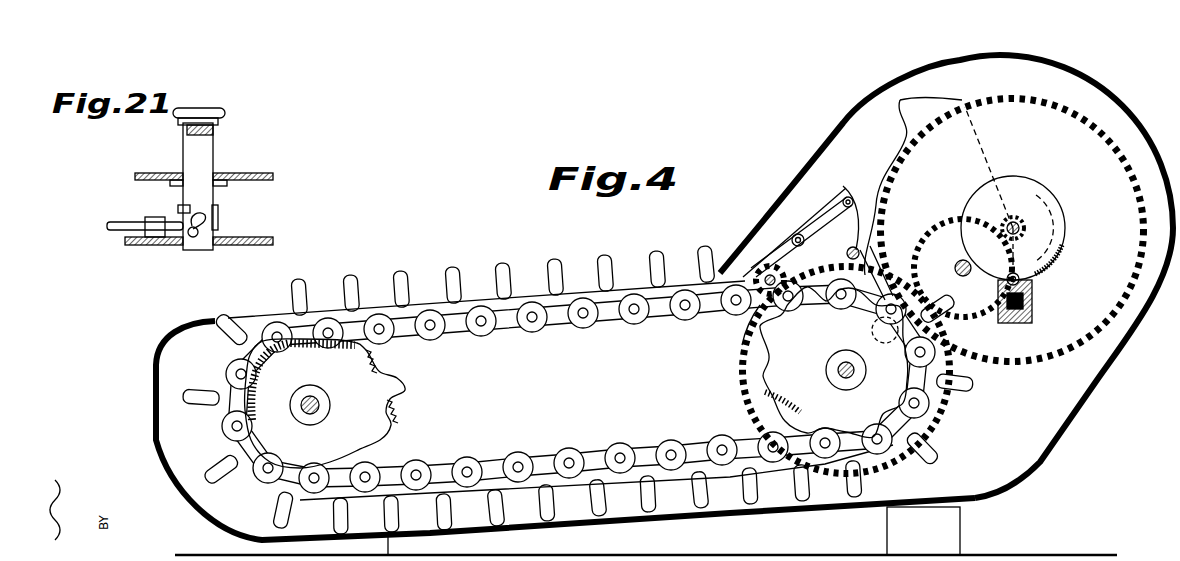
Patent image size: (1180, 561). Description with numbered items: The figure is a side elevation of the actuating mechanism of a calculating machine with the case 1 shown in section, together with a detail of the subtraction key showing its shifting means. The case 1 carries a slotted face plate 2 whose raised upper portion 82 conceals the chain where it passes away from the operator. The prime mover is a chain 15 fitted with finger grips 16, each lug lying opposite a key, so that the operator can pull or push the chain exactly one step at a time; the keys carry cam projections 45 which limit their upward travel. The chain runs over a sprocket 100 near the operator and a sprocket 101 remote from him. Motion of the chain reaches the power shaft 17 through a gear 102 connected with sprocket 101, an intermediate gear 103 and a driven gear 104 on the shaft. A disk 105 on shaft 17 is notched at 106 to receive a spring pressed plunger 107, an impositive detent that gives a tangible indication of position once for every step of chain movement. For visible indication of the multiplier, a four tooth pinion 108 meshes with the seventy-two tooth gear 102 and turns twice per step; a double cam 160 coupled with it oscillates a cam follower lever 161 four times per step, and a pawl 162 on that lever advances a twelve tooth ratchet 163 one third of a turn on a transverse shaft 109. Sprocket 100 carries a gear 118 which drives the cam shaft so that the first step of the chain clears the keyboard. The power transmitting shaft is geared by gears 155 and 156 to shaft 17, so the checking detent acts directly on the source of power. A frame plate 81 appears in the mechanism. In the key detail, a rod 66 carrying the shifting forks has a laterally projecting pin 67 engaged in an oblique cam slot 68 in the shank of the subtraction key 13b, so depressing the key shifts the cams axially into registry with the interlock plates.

In FIG. 21, the subtraction key 13b is at (193, 155).
In FIG. 21, the slotted face plate 2 is at (255, 172).
In FIG. 4, the slotted face plate 2 is at (156, 383).
In FIG. 21, the rod 66 is at (112, 230).
In FIG. 21, the laterally projecting pin 67 is at (193, 245).
In FIG. 21, the cam slot 68 is at (220, 218).
In FIG. 4, the case 1 is at (578, 300).
In FIG. 4, the chain 15 is at (470, 302).
In FIG. 4, the finger grips 16 is at (455, 284).
In FIG. 4, the sprocket 100 is at (392, 424).
In FIG. 4, the gear 118 is at (385, 372).
In FIG. 4, the sprocket 101 is at (753, 385).
In FIG. 4, the gear 102 is at (745, 361).
In FIG. 4, the four tooth pinion 108 is at (736, 327).
In FIG. 4, the frame plate 81 is at (913, 107).
In FIG. 4, the raised portion of the housing 82 is at (1068, 78).
In FIG. 4, the gear 156 is at (1093, 152).
In FIG. 4, the power shaft 17 is at (1020, 222).
In FIG. 4, the intermediate gear 103 is at (932, 233).
In FIG. 4, the driven gear 104 is at (998, 213).
In FIG. 4, the disk 105 is at (1067, 230).
In FIG. 4, the notch 106 is at (1030, 274).
In FIG. 4, the spring pressed plunger 107 is at (1032, 296).
In FIG. 4, the shaft 109 is at (806, 237).
In FIG. 4, the double cam 160 is at (758, 278).
In FIG. 4, the cam follower lever 161 is at (765, 258).
In FIG. 4, the pawl 162 is at (868, 172).
In FIG. 4, the ratchet 163 is at (841, 212).
In FIG. 4, the gear 155 is at (872, 332).
In FIG. 4, the cam projection 45 is at (862, 338).